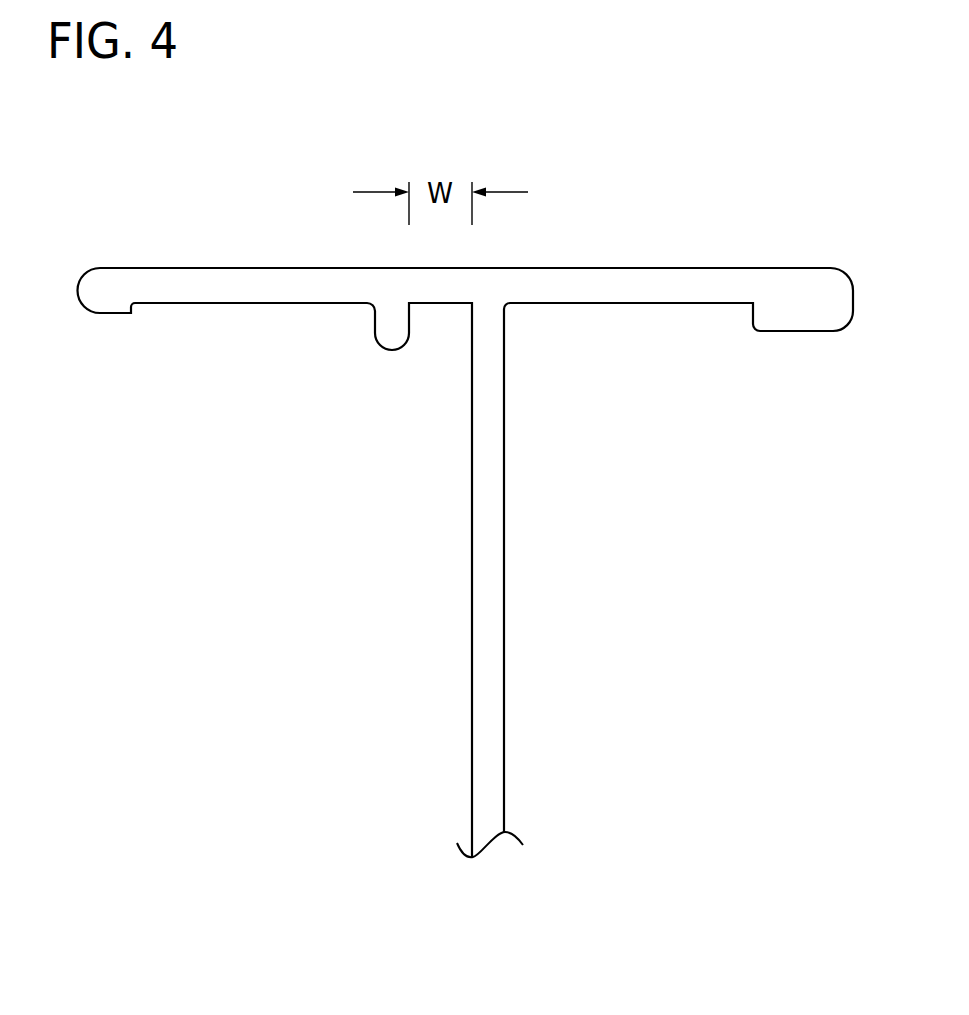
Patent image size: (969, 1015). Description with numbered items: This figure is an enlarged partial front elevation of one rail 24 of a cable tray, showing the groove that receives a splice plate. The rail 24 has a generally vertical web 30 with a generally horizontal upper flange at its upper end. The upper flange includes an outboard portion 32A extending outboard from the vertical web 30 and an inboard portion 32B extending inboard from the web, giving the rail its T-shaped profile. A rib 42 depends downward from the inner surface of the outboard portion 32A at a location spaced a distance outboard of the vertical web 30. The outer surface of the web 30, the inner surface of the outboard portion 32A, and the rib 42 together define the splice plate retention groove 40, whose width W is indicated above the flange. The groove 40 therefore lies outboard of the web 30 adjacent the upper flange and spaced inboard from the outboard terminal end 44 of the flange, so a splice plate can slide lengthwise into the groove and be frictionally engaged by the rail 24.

The rail 24 is at (527, 686).
The vertical web 30 is at (492, 508).
The outboard portion of the upper flange 32A is at (206, 281).
The inboard portion of the upper flange 32B is at (641, 281).
The splice plate retention groove 40 is at (428, 319).
The rib 42 is at (392, 348).
The outboard terminal end of the upper flange 44 is at (75, 291).